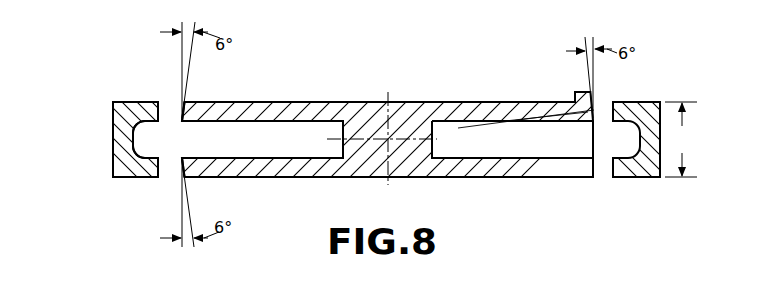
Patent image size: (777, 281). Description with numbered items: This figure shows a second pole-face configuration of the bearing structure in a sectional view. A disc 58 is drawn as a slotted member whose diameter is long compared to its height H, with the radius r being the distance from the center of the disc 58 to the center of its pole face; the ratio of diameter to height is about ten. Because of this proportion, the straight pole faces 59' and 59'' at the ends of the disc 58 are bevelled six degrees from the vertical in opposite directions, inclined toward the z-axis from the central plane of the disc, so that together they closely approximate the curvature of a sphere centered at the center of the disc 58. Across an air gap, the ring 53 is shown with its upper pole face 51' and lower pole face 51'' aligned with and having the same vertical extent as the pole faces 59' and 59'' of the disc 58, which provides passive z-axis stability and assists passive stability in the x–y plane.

The disc 58 is at (328, 102).
The ring 53 is at (122, 133).
The upper pole face 51' is at (132, 103).
The lower pole face 51'' is at (141, 178).
The upper pole face 59' is at (152, 83).
The lower pole face 59'' is at (151, 196).
The radius r is at (517, 124).
The height H is at (681, 139).